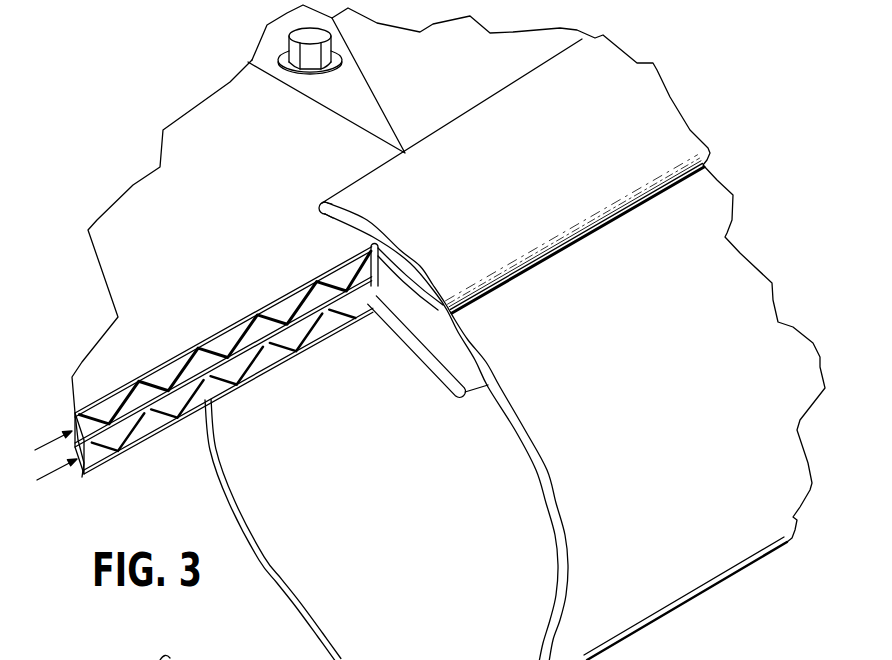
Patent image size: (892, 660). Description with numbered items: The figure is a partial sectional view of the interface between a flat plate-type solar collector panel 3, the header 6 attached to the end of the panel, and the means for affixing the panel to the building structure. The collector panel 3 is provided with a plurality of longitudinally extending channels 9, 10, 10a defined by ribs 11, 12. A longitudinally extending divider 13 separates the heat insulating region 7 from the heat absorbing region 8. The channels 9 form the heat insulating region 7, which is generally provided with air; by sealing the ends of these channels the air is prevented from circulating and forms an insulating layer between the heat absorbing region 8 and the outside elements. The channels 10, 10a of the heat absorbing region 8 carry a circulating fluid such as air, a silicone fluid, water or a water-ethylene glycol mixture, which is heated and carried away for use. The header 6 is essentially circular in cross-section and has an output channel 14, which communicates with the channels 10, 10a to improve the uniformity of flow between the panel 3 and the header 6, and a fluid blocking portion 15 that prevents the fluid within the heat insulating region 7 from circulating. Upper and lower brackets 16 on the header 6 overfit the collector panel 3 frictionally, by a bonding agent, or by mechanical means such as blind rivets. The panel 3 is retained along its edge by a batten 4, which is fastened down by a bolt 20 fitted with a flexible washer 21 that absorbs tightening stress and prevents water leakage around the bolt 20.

The solar collector panel 3 is at (138, 207).
The batten 4 is at (450, 112).
The header 6 is at (727, 237).
The heat insulating region 7 is at (47, 446).
The heat absorbing region 8 is at (49, 477).
The channel 9 is at (167, 373).
The channel 10 is at (127, 440).
The channel 10a is at (163, 408).
The rib 11 is at (98, 397).
The rib 12 is at (123, 453).
The divider 13 is at (267, 367).
The output channel 14 is at (466, 365).
The fluid blocking portion 15 is at (378, 257).
The bracket 16 is at (367, 224).
The bolt 20 is at (290, 22).
The flexible washer 21 is at (333, 51).